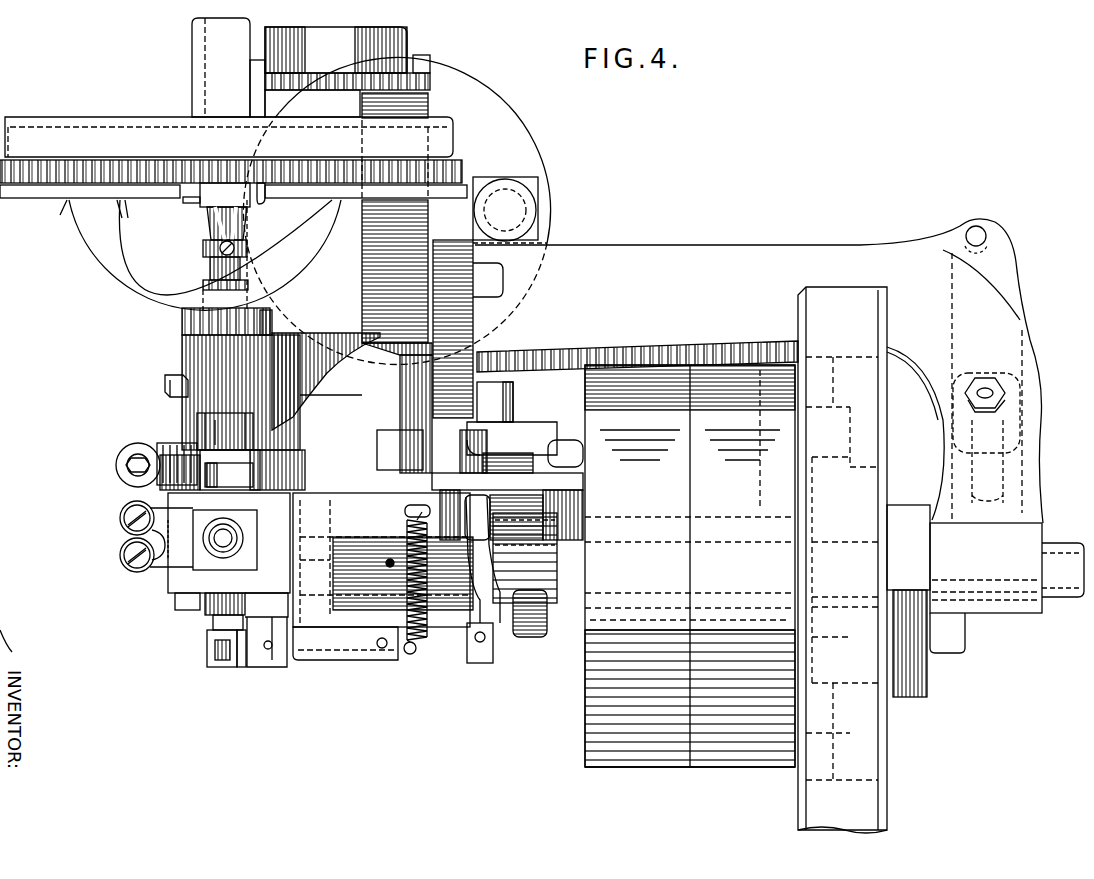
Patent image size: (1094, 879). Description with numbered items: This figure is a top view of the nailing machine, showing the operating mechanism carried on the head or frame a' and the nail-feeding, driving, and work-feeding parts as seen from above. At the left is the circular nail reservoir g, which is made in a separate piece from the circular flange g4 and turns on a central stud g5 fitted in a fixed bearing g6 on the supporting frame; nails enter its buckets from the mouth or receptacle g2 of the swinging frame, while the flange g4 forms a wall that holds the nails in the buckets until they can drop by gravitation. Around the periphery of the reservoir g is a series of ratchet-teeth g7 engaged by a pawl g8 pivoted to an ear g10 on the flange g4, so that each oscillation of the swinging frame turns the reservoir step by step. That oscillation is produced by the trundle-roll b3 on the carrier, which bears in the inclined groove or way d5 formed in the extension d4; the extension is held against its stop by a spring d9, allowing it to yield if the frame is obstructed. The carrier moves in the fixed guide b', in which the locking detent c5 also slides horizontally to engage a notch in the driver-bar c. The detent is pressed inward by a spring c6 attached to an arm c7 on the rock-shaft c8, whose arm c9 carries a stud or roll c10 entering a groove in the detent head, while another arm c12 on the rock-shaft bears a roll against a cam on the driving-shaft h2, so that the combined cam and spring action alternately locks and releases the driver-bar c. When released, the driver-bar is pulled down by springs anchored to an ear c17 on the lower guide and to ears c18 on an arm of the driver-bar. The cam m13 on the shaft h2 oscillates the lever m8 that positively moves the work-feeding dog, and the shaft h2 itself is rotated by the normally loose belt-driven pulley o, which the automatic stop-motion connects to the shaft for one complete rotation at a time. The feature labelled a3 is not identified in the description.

The reservoir g is at (445, 142).
The mouth or receptacle g2 is at (207, 220).
The circular flange g4 is at (62, 192).
The stud g5 is at (190, 20).
The fixed bearing g6 is at (215, 78).
The ratchet-teeth g7 is at (188, 184).
The pawl g8 is at (258, 178).
The ear g10 is at (240, 200).
The head or frame a' is at (396, 265).
The frame column a3 is at (225, 352).
The extension d4 is at (182, 420).
The spring d9 is at (133, 448).
The trundle-roll b3 is at (220, 465).
The fixed guide b' is at (191, 583).
The inclined groove or way d5 is at (262, 465).
The driver-bar c is at (252, 528).
The ears c18 is at (118, 517).
The ear c17 is at (180, 545).
The locking pin or detent c5 is at (212, 626).
The stud or roll c10 is at (220, 650).
The arm c9 is at (242, 668).
The rock-shaft c8 is at (370, 660).
The arm c7 is at (410, 655).
The spring c6 is at (425, 617).
The arm or lever c12 is at (490, 568).
The cam m13 is at (520, 640).
The lever m8 is at (520, 460).
The driving-shaft h2 is at (1050, 558).
The pulley o is at (862, 722).